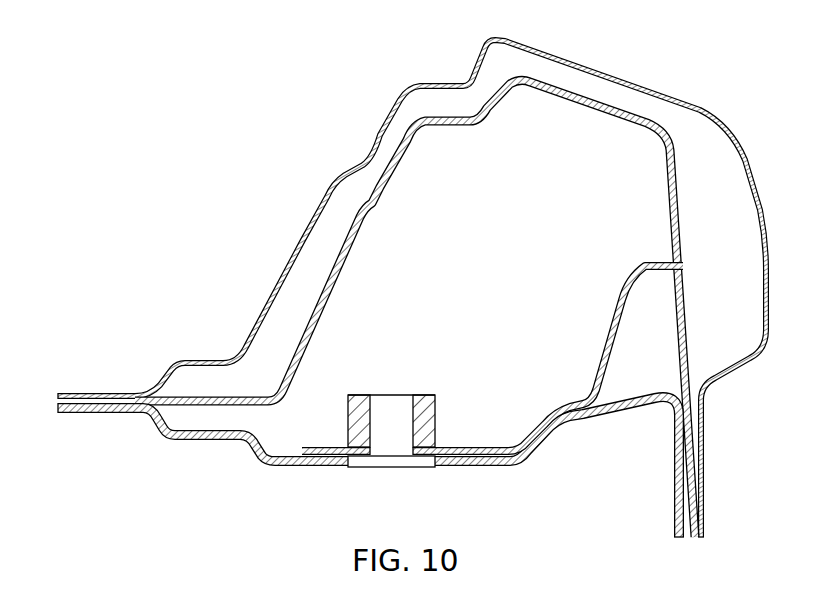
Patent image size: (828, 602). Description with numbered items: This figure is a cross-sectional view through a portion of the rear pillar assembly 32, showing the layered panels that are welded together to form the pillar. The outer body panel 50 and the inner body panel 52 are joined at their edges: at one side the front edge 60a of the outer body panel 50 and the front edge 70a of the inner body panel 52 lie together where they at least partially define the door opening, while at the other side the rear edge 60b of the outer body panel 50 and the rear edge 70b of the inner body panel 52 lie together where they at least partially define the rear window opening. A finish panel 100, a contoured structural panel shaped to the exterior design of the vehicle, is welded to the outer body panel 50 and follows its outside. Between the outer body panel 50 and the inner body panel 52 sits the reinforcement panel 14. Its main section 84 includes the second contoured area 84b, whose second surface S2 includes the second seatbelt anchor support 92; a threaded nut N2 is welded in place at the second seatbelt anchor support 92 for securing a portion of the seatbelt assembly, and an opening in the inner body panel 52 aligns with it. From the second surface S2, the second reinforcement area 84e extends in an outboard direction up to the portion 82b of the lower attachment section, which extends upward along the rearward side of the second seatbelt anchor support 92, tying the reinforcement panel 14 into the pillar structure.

The rear pillar assembly 32 is at (234, 140).
The finish panel 100 is at (303, 238).
The outer body panel 50 is at (388, 192).
The inner body panel 52 is at (247, 446).
The main section 84 is at (325, 447).
The second contoured area 84b is at (484, 447).
The second reinforcement area 84e is at (626, 314).
The reinforcement panel 14 is at (637, 265).
The portion of the lower attachment section 82b is at (672, 278).
The second seatbelt anchor support 92 is at (384, 395).
The threaded nut N2 is at (435, 410).
The second surface S2 is at (310, 467).
The front edge 60a is at (58, 398).
The rear edge 60b is at (699, 538).
The front edge 70a is at (58, 408).
The rear edge 70b is at (681, 538).